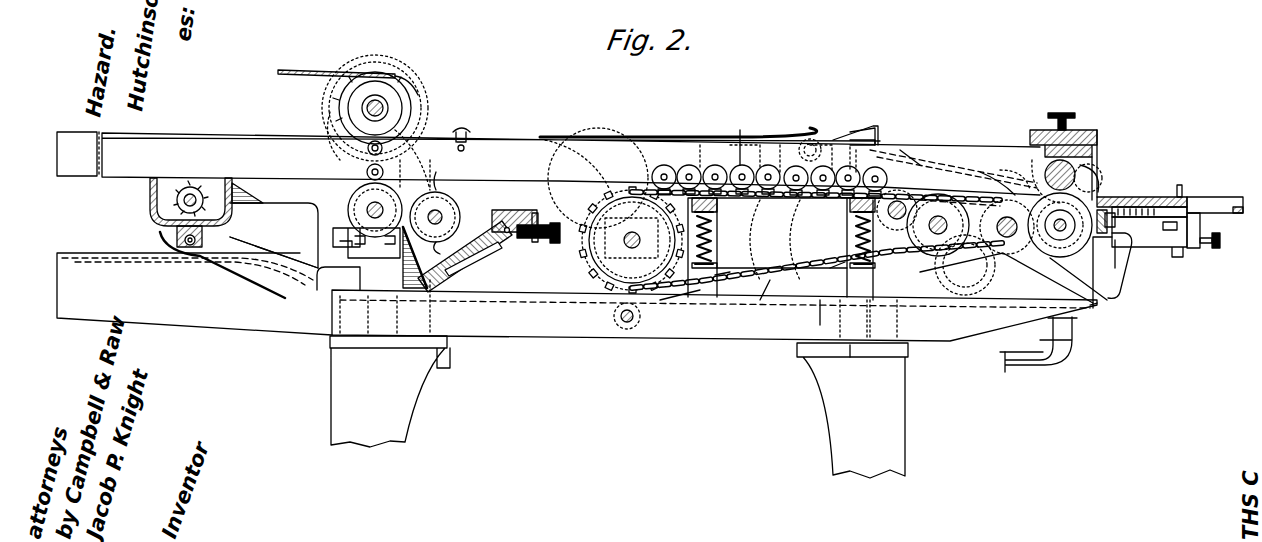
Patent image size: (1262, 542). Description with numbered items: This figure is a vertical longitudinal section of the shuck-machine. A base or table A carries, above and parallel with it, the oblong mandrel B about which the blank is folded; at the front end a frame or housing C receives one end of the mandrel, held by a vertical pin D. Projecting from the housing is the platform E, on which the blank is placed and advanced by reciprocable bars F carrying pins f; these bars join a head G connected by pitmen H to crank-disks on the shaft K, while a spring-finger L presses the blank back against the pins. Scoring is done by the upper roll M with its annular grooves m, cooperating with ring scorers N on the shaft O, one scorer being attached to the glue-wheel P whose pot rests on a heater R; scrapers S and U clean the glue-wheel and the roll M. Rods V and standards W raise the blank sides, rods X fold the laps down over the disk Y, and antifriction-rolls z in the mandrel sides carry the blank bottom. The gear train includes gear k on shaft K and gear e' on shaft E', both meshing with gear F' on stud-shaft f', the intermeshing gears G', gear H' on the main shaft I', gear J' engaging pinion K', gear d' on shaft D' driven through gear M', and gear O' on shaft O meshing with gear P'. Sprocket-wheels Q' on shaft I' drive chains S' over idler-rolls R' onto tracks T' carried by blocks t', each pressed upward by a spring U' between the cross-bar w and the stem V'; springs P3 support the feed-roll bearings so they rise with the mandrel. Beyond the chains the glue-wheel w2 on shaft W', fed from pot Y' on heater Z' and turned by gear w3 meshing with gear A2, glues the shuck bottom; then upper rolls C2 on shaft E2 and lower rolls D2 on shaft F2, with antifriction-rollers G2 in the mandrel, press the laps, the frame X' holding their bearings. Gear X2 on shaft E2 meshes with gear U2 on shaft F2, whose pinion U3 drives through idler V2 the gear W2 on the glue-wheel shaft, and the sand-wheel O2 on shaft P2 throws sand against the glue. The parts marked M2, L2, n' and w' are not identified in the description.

The base or table A is at (688, 338).
The mandrel B is at (958, 136).
The heater R is at (1041, 344).
The idler-rolls R' is at (1011, 345).
The upper roll-shaft E2 is at (378, 106).
The gear-wheel X2 is at (412, 78).
The upper rolls C2 is at (336, 116).
The idler V2 is at (385, 146).
The lug M2 is at (470, 128).
The pin L2 is at (470, 130).
The antifriction-roller G2 is at (366, 172).
The lower rolls D2 is at (352, 196).
The gear-wheel W2 is at (448, 195).
The gear-wheel w3 is at (427, 167).
The glue-wheel w2 is at (450, 208).
The pinion U3 is at (330, 186).
The sand-wheel shaft P2 is at (192, 196).
The sand-wheel O2 is at (180, 214).
The sprocket-chains S' is at (530, 220).
The lower roll-shaft F2 is at (318, 225).
The gear-wheel U2 is at (357, 259).
The frame X' is at (222, 276).
The glue-wheel shaft W' is at (485, 267).
The heater Z' is at (460, 259).
The glue pot Y' is at (462, 307).
The main shaft I' is at (612, 244).
The sprocket-wheels Q' is at (631, 218).
The gear-wheel H' is at (785, 258).
The pinion K' is at (622, 337).
The gear-wheel J' is at (680, 310).
The gear-wheel A2 is at (598, 140).
The antifriction-rolls z is at (690, 175).
The roller or disk Y is at (678, 120).
The lap-folding rods X is at (844, 122).
The standards W is at (863, 118).
The rods or bars V is at (910, 140).
The upper scorer-roll M is at (997, 155).
The scraper U is at (1045, 115).
The vertical pin D is at (1050, 145).
The gear-wheel O' is at (1097, 147).
The gear-wheel P' is at (1113, 150).
The frame or housing C is at (1085, 195).
The spring-finger L is at (1078, 212).
The annular grooves m is at (1068, 223).
The table or platform E is at (1142, 197).
The reciprocable feed-bars F is at (1215, 188).
The studs or pins f is at (1193, 174).
The pitmen H is at (1179, 191).
The scraper S is at (1192, 250).
The cross bar or head G is at (1222, 259).
The scorers N is at (1125, 265).
The scorer and glue-wheel shaft O is at (1121, 277).
The lug n' is at (1104, 319).
The gear-wheel M' is at (1013, 290).
The springs P3 is at (965, 265).
The gear-wheel e' is at (938, 240).
The stud-shaft f' is at (979, 255).
The shaft K is at (897, 190).
The gear-wheel k is at (898, 231).
The gear-wheel d' is at (960, 183).
The shaft D' is at (1002, 169).
The blocks t' is at (783, 231).
The rod or stem V' is at (719, 253).
The tracks or rails T' is at (784, 247).
The spring U' is at (782, 255).
The glue-wheel P is at (845, 249).
The link w' is at (842, 281).
The cross-bar w is at (725, 293).
The intermeshing gears G' is at (774, 305).
The gear-wheel F' is at (883, 310).
The shaft E' is at (857, 348).